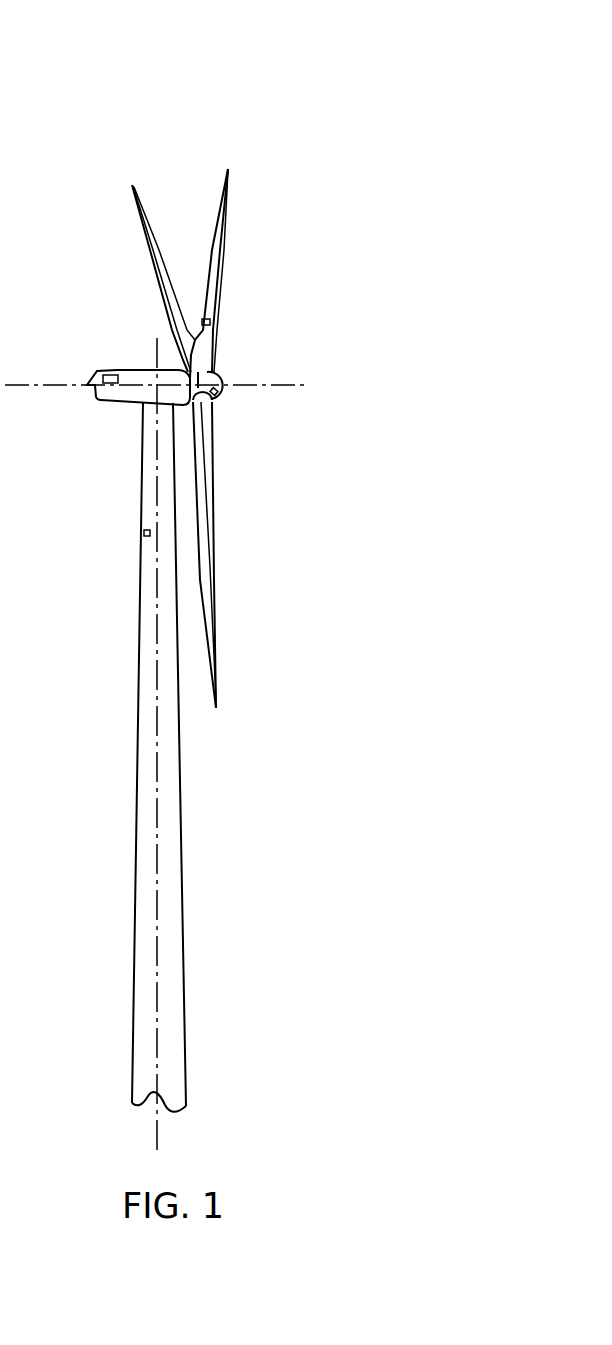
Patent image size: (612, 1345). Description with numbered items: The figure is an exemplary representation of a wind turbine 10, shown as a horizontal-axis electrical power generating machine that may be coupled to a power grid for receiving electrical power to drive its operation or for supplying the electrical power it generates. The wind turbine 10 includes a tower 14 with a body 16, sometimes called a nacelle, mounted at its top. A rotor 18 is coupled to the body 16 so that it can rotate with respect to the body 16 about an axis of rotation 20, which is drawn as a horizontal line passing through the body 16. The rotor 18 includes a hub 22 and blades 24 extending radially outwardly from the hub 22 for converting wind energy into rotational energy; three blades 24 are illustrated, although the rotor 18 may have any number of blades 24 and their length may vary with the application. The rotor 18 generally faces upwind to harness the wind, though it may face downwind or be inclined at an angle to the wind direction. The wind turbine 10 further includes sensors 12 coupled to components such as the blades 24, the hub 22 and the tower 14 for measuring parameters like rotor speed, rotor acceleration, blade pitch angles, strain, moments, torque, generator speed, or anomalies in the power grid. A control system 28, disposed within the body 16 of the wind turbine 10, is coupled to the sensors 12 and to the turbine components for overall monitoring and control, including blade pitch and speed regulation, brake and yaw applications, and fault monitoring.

The wind turbine 10 is at (386, 65).
The sensors 12 is at (204, 318).
The tower 14 is at (133, 860).
The body 16 is at (105, 403).
The rotor 18 is at (233, 433).
The axis of rotation 20 is at (288, 388).
The hub 22 is at (222, 378).
The blades 24 is at (145, 236).
The control system 28 is at (110, 374).